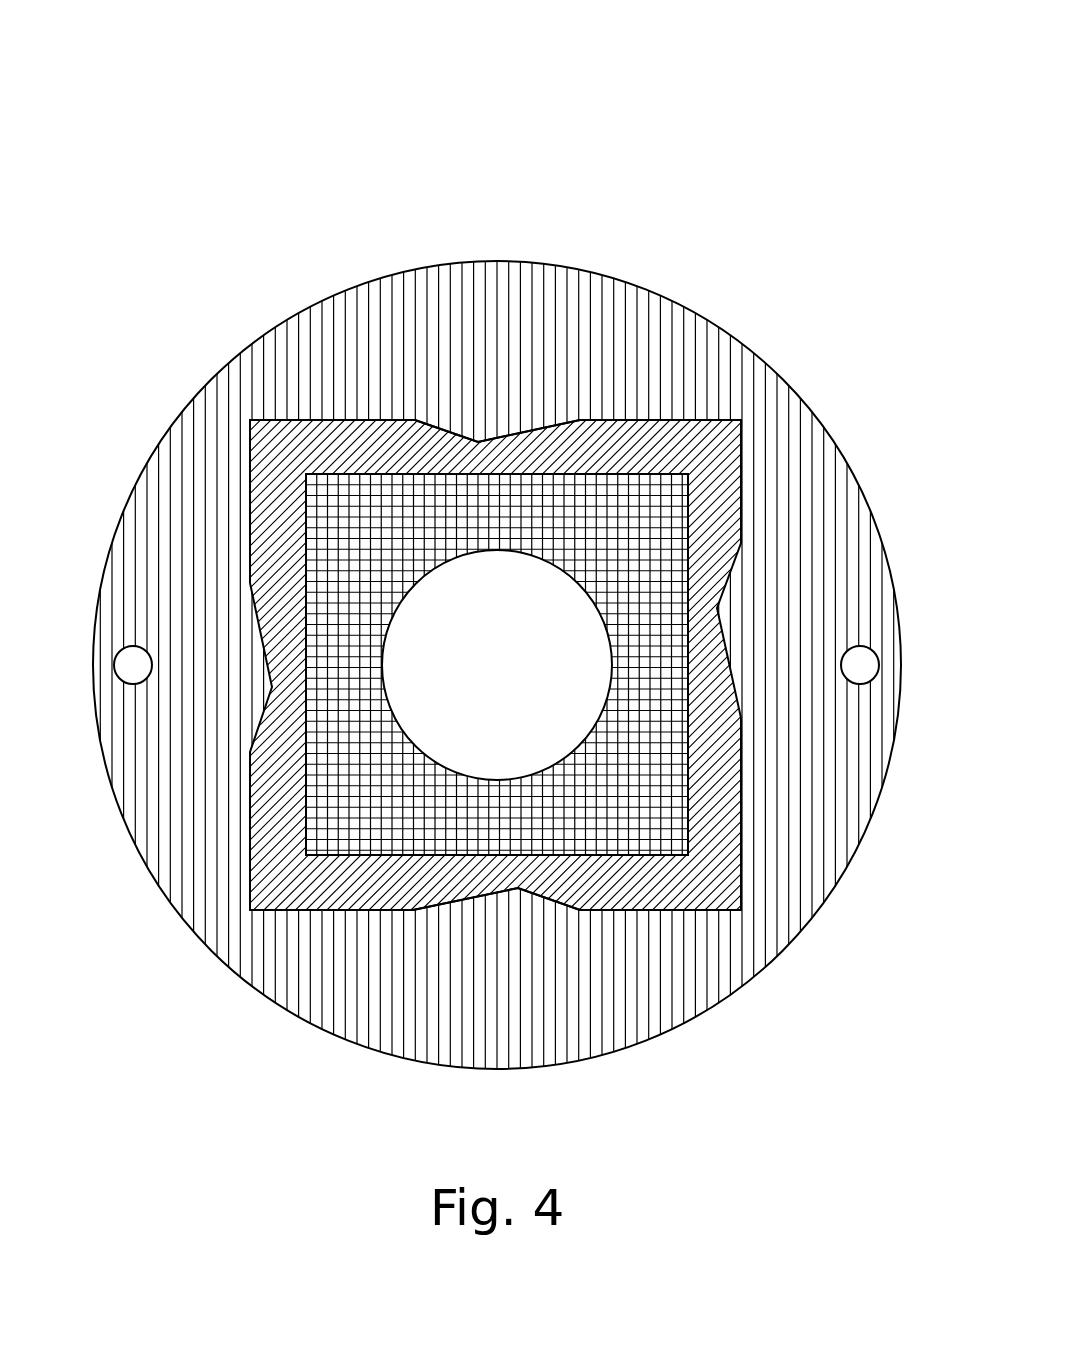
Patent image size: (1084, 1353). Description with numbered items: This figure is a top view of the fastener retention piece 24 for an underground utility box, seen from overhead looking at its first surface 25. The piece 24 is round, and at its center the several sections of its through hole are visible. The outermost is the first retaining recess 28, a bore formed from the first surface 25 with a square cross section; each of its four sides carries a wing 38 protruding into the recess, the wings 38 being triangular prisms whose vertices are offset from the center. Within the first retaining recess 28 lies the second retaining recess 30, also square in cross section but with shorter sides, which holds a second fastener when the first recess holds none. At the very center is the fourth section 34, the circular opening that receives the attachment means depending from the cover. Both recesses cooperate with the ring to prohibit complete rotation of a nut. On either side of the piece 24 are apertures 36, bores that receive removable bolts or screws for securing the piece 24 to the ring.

The fastener retention piece 24 is at (813, 920).
The first surface 25 is at (145, 537).
The first retaining recess 28 is at (597, 448).
The second retaining recess 30 is at (667, 528).
The fourth section 34 is at (410, 468).
The apertures 36 is at (863, 657).
The wings 38 is at (478, 433).